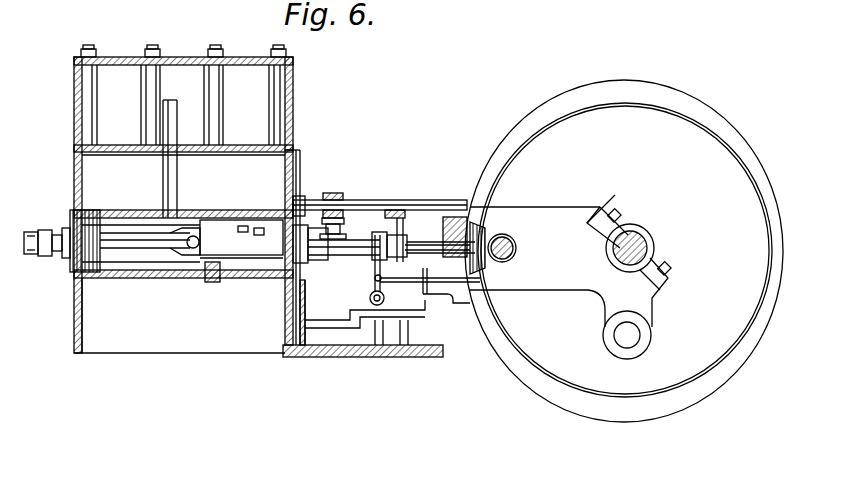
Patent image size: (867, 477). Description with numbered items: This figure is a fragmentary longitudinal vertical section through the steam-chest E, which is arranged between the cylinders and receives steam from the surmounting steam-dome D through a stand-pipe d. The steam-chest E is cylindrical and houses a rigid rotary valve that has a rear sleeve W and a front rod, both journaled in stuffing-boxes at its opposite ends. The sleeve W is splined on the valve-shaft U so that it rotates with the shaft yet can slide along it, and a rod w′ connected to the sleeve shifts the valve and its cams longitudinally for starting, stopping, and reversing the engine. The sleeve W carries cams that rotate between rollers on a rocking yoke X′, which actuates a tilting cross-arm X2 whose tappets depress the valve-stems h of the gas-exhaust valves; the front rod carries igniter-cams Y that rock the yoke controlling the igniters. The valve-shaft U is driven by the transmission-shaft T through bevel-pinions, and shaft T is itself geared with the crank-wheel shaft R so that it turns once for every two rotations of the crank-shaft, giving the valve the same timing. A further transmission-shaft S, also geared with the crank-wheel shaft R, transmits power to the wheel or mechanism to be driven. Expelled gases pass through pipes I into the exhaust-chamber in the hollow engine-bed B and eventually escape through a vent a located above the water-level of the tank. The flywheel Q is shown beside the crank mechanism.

The steam-dome D is at (197, 199).
The stand-pipe d is at (163, 178).
The igniter-cams Y is at (46, 258).
The rod w′ is at (166, 245).
The steam-chest E is at (181, 281).
The vent a is at (207, 278).
The sleeve W is at (355, 258).
The valve-stems h is at (323, 220).
The tilting cross-arm X2 is at (345, 185).
The rocking yoke X′ is at (403, 250).
The valve-shaft U is at (431, 253).
The transmission-shaft T is at (517, 246).
The pipes I is at (362, 313).
The engine-bed B is at (425, 392).
The fly-wheel Q is at (624, 251).
The crank-wheel shaft R is at (655, 238).
The transmission-shaft S is at (627, 335).